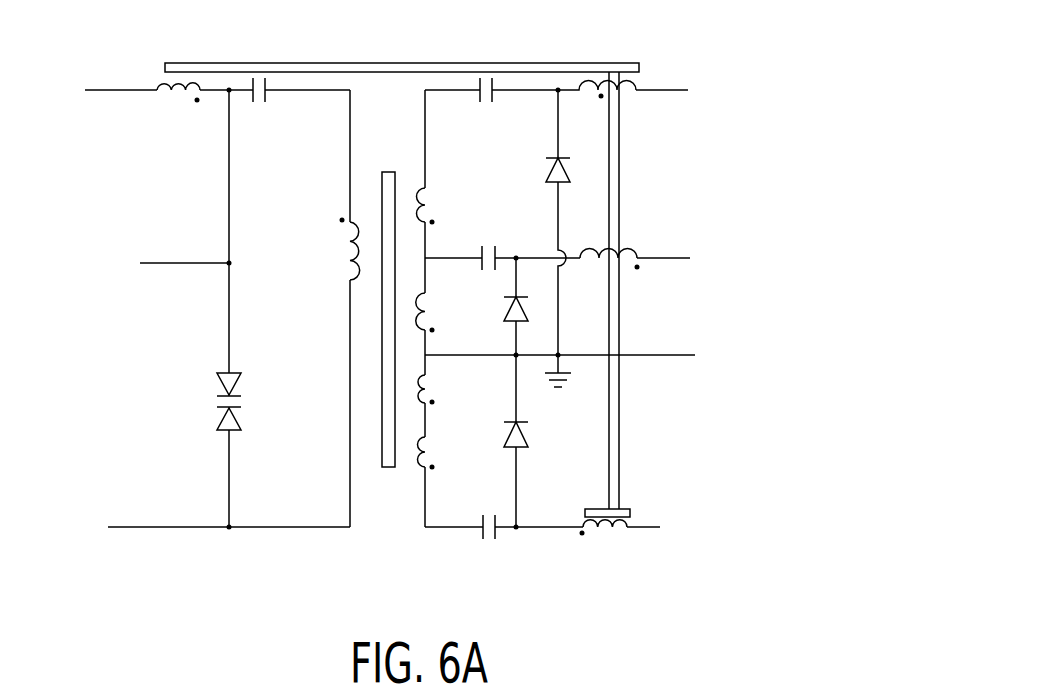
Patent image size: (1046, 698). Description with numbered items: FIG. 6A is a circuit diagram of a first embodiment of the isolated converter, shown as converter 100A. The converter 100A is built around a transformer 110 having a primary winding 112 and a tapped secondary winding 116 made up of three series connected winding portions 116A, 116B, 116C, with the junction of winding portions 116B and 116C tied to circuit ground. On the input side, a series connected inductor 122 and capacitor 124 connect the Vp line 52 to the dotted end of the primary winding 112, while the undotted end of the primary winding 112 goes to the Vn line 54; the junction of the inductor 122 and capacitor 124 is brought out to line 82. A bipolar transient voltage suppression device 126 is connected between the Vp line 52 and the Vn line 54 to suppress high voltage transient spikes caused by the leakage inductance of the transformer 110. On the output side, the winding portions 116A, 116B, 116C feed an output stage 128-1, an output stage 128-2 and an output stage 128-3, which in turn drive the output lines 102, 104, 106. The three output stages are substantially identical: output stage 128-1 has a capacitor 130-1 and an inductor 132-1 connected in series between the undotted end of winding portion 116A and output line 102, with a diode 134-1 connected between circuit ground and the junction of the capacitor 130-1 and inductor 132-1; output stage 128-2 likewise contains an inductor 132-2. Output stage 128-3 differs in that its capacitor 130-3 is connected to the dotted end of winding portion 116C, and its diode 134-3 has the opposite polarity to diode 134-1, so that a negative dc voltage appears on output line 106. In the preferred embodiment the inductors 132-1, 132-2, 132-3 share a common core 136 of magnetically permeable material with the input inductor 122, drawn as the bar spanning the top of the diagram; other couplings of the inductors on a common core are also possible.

The Vp line 52 is at (93, 90).
The Vn line 54 is at (137, 527).
The line 82 is at (158, 263).
The converter 100A is at (168, 357).
The output line 102 is at (668, 90).
The output line 104 is at (677, 259).
The output line 106 is at (660, 527).
The transformer 110 is at (382, 520).
The primary winding 112 is at (348, 248).
The tapped secondary winding 116 is at (418, 478).
The secondary winding portion 116A is at (424, 196).
The secondary winding portion 116B is at (424, 313).
The secondary winding portion 116C is at (487, 378).
The inductor 122 is at (186, 94).
The capacitor 124 is at (267, 93).
The bipolar transient voltage suppression device 126 is at (217, 402).
The output stage 128-1 is at (672, 177).
The output stage 128-2 is at (672, 308).
The output stage 128-3 is at (672, 437).
The capacitor 130-1 is at (493, 92).
The capacitor 130-3 is at (484, 520).
The inductor 132-1 is at (640, 88).
The inductor 132-2 is at (645, 258).
The inductor 132-3 is at (583, 520).
The diode 134-1 is at (556, 184).
The diode 134-3 is at (528, 441).
The common core 136 is at (528, 63).